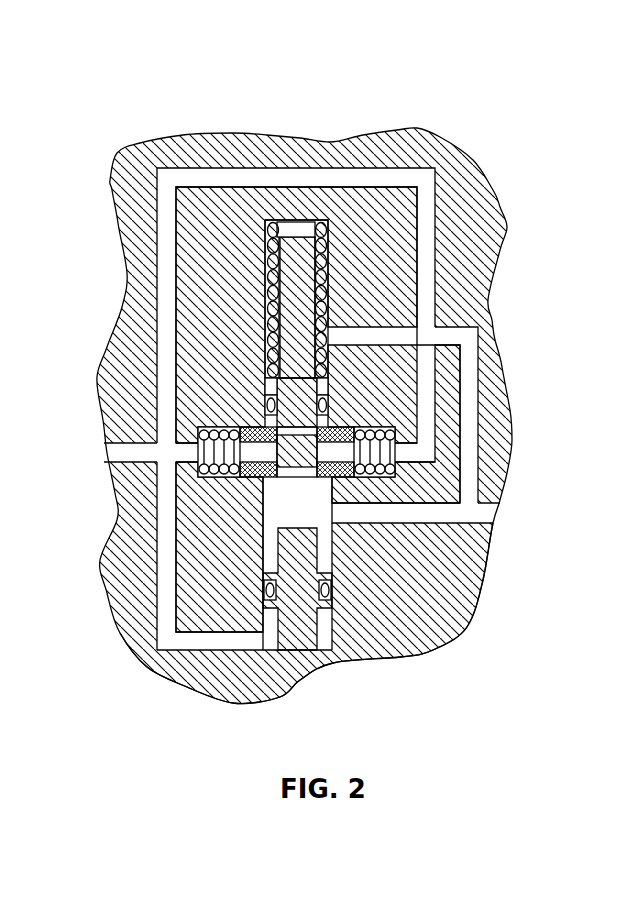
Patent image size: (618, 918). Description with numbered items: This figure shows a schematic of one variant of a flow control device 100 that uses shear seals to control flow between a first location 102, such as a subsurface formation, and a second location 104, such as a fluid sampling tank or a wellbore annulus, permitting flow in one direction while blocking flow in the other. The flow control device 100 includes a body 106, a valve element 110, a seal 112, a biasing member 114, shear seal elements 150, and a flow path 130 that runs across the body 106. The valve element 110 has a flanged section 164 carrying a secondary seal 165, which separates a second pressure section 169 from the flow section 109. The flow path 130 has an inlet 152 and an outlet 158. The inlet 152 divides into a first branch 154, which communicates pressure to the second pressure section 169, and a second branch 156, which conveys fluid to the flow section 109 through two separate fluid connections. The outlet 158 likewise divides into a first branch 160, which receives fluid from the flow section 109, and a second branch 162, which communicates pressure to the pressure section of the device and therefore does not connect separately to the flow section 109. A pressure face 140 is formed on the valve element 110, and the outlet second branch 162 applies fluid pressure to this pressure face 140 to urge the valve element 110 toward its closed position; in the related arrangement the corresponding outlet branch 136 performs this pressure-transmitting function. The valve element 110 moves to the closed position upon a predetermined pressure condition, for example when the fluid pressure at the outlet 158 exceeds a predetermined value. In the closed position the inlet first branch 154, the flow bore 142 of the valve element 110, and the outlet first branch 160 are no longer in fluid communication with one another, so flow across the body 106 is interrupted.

The flow control device 100 is at (468, 85).
The first location 102 is at (88, 453).
The second location 104 is at (507, 508).
The body 106 is at (487, 230).
The flow section 109 is at (463, 627).
The valve element 110 is at (295, 400).
The seal 112 is at (266, 405).
The biasing member 114 is at (270, 248).
The flow path 130 is at (180, 652).
The branch 136 is at (268, 282).
The pressure face 140 is at (283, 385).
The flow bore 142 is at (288, 520).
The shear seal elements 150 is at (267, 482).
The inlet 152 is at (147, 448).
The first branch 154 is at (163, 588).
The second branch 156 is at (225, 177).
The outlet 158 is at (428, 525).
The first branch 160 is at (468, 517).
The second branch 162 is at (470, 432).
The flanged section 164 is at (333, 627).
The secondary seal 165 is at (332, 585).
The second pressure section 169 is at (317, 590).